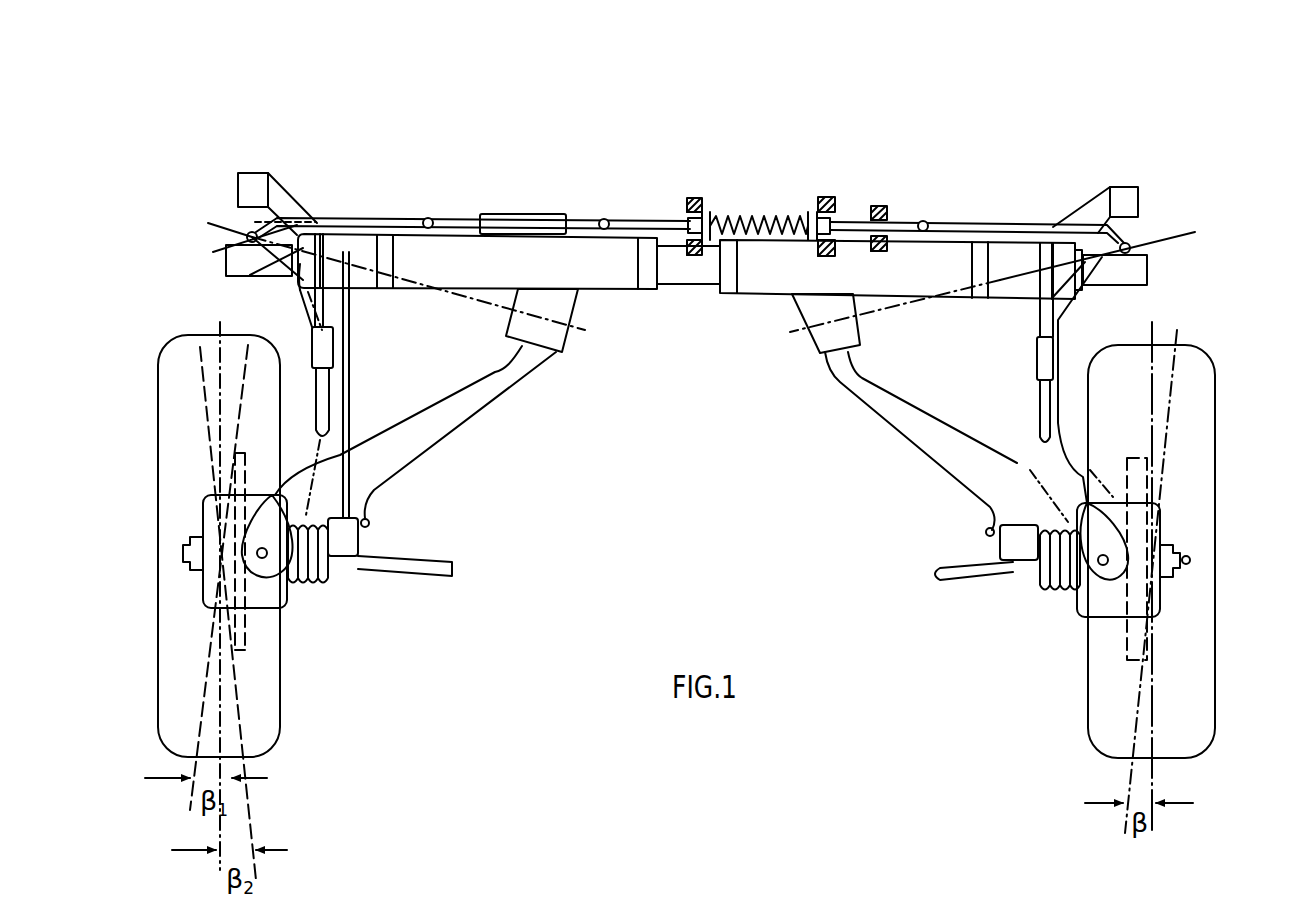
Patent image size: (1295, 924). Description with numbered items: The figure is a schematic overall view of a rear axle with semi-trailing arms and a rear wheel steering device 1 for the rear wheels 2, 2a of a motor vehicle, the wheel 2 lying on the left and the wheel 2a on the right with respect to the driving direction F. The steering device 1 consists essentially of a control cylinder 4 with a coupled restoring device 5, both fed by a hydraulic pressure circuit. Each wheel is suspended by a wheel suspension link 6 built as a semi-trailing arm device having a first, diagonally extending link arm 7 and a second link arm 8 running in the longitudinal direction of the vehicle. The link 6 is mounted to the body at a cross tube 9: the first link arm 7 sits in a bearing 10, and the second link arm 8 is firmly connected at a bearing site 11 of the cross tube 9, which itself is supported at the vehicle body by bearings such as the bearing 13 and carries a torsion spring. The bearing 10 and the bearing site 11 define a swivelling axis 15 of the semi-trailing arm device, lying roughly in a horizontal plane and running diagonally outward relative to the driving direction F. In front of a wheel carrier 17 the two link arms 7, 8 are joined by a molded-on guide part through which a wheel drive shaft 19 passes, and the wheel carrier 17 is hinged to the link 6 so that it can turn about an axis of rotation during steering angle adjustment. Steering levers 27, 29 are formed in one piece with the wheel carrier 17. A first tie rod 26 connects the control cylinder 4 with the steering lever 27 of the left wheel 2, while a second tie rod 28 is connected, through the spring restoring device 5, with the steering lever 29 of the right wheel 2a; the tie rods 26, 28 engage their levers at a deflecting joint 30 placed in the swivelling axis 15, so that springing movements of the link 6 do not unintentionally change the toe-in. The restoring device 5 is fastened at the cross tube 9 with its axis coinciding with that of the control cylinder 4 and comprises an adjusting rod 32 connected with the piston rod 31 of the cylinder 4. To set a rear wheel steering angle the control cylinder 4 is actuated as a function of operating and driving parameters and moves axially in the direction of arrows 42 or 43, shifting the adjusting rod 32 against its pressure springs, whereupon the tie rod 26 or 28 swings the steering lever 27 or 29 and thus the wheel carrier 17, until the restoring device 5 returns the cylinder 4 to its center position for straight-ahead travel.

The steering device 1 is at (660, 112).
The driving direction F is at (1040, 50).
The rear wheel 2 is at (168, 452).
The rear wheel 2a is at (1200, 462).
The control cylinder 4 is at (540, 223).
The restoring device 5 is at (772, 197).
The wheel suspension link 6 is at (895, 453).
The first link arm 7 is at (493, 385).
The second link arm 8 is at (350, 425).
The cross tube 9 is at (757, 316).
The bearing 10 is at (560, 310).
The bearing site 11 is at (323, 253).
The bearing 13 is at (1130, 187).
The swivelling axis 15 is at (475, 300).
The wheel carrier 17 is at (262, 598).
The wheel drive shaft 19 is at (970, 580).
The first tie rod 26 is at (343, 222).
The steering lever 27 is at (226, 272).
The second tie rod 28 is at (1016, 230).
The steering lever 29 is at (1093, 288).
The deflecting joint 30 is at (250, 234).
The piston rod 31 is at (590, 223).
The adjusting rod 32 is at (856, 224).
The arrow 42 is at (445, 200).
The arrow 43 is at (517, 200).